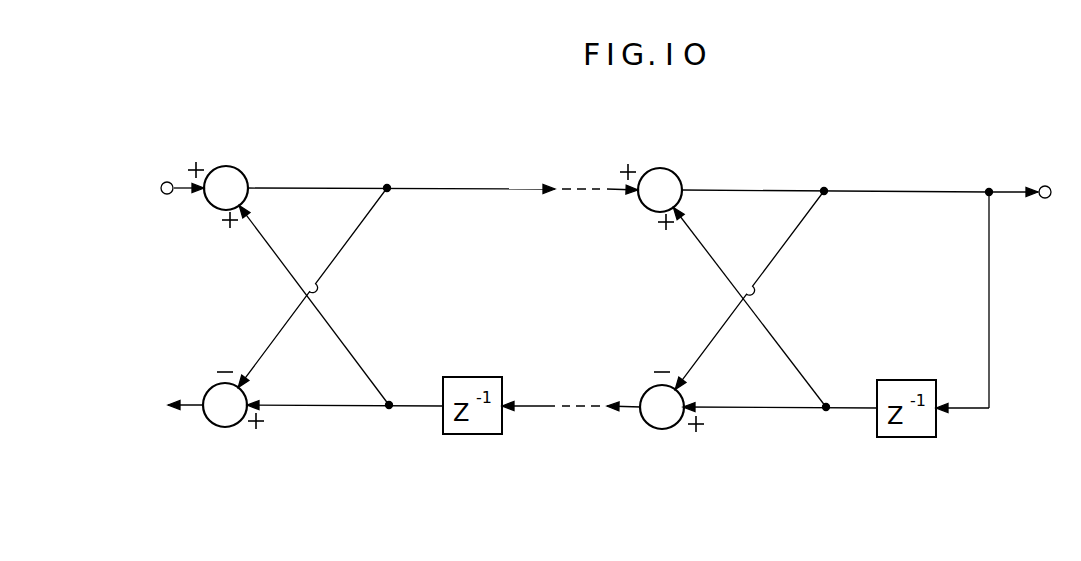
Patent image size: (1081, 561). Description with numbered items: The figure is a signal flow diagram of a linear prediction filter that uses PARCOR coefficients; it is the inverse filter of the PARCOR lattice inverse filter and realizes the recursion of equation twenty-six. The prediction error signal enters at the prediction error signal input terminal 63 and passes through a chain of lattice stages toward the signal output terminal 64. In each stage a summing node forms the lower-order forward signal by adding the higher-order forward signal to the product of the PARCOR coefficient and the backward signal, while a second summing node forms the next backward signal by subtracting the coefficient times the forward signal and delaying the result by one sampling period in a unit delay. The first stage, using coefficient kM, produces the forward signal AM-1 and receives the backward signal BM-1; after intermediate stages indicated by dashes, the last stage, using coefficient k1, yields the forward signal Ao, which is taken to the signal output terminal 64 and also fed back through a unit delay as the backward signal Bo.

The prediction error signal input terminal 63 is at (166, 181).
The signal output terminal 64 is at (1044, 185).
The PARCOR coefficient of the M-th stage kM is at (313, 296).
The PARCOR coefficient of the first stage k1 is at (749, 299).
The forward signal A_{M-1}(Z) AM-1 is at (401, 176).
The forward signal A_0(Z) Ao is at (835, 179).
The backward signal B_{M-1}(Z) BM-1 is at (345, 396).
The backward signal B_0(Z) Bo is at (780, 398).